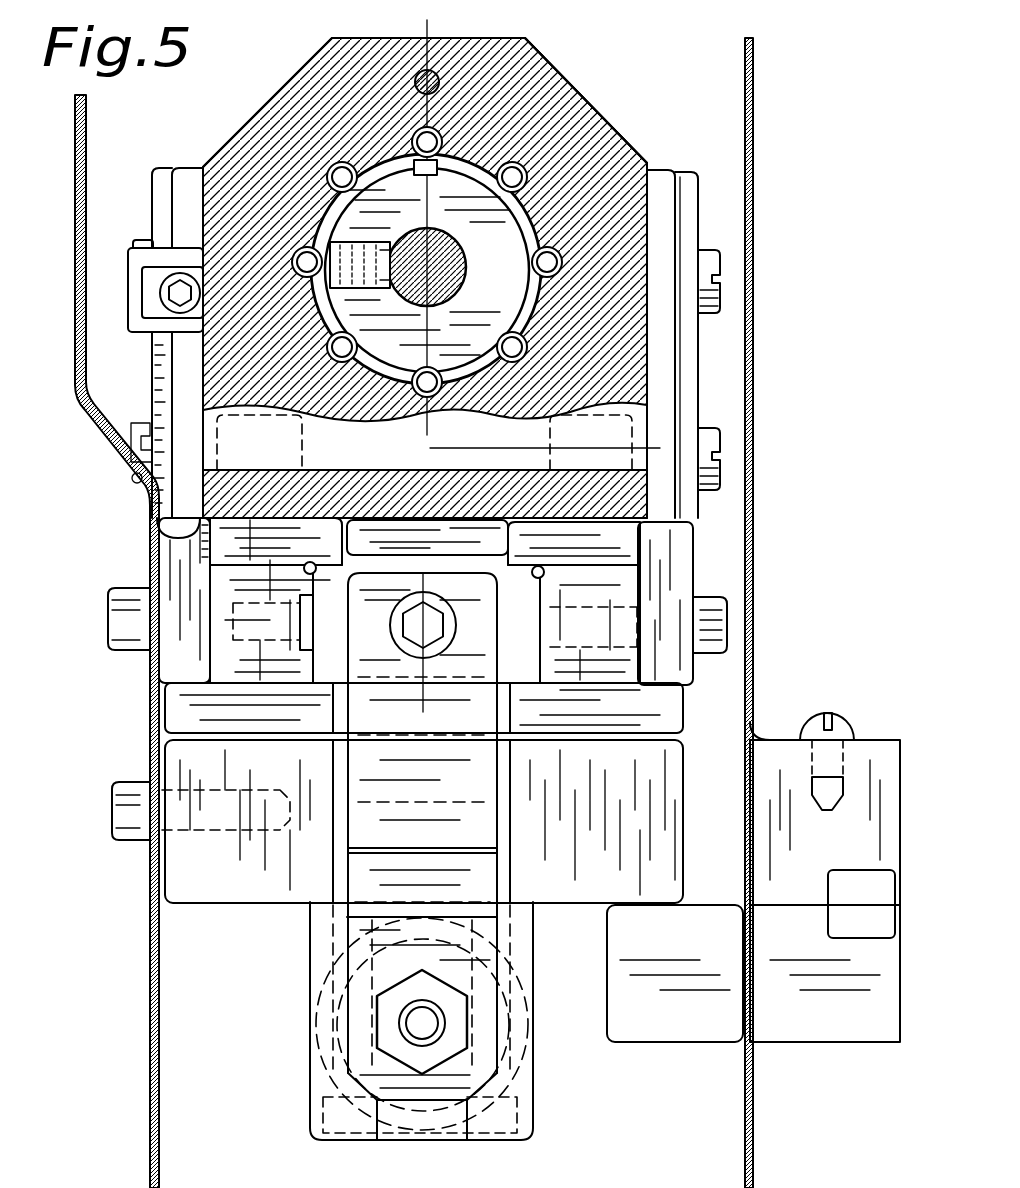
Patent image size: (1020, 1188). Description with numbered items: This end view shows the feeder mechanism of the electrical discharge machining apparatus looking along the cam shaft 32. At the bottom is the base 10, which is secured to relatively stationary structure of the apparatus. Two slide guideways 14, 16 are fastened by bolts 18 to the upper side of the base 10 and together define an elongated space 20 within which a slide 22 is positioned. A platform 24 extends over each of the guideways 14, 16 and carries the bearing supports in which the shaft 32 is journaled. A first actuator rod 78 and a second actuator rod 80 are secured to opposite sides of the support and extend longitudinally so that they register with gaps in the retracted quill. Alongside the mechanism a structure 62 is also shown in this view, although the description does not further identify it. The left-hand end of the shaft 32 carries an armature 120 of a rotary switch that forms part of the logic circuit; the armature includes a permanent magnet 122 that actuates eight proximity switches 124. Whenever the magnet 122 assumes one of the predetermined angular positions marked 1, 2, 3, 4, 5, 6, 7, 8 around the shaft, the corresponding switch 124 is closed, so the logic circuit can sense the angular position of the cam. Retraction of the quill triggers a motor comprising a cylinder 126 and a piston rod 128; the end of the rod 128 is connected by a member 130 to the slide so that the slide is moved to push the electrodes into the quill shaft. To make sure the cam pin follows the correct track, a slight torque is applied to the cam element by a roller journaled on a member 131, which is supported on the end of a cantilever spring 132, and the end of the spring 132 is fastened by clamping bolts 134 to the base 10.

The magnet position 1 is at (417, 127).
The magnet position 2 is at (521, 165).
The magnet position 3 is at (561, 263).
The magnet position 4 is at (521, 364).
The magnet position 5 is at (427, 406).
The magnet position 6 is at (635, 938).
The magnet position 7 is at (289, 263).
The magnet position 8 is at (327, 165).
The base 10 is at (263, 904).
The slide guideway 14 is at (217, 565).
The slide guideway 16 is at (637, 592).
The bolts 18 is at (305, 444).
The elongated space 20 is at (330, 572).
The slide 22 is at (330, 683).
The platform 24 is at (617, 132).
The shaft 32 is at (451, 267).
The mounting plate 62 is at (699, 217).
The first actuator rod 78 is at (643, 543).
The second actuator rod 80 is at (200, 535).
The armature 120 is at (507, 283).
The permanent magnet 122 is at (312, 60).
The proximity switches 124 is at (413, 173).
The cylinder 126 is at (538, 1068).
The piston rod 128 is at (413, 1022).
The member 130 is at (363, 1003).
The member 131 is at (132, 275).
The cantilever spring 132 is at (155, 368).
The clamping bolts 134 is at (132, 842).